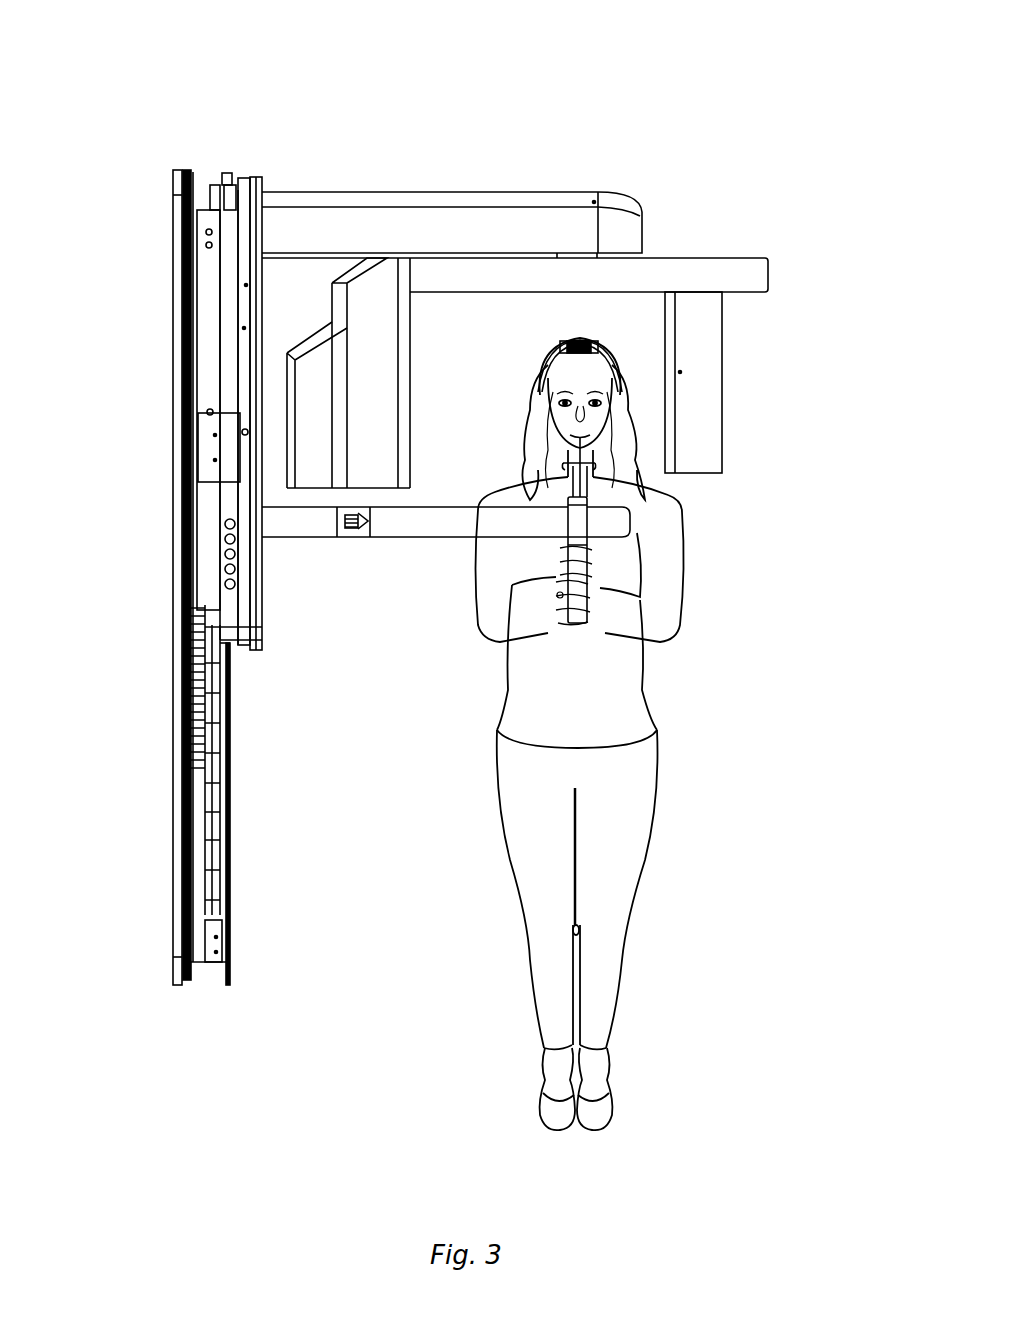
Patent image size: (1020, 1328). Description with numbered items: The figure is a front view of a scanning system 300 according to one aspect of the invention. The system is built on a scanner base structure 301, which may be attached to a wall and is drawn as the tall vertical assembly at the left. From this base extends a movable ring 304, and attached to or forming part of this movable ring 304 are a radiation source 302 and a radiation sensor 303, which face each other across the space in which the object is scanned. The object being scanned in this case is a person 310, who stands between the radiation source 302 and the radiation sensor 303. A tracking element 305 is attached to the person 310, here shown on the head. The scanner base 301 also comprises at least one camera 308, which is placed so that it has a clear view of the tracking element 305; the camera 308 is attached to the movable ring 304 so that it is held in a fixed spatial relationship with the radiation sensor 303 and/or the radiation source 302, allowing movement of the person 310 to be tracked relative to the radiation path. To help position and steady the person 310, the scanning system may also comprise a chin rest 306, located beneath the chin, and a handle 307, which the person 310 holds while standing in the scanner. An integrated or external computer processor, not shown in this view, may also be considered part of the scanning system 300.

The scanning system 300 is at (475, 565).
The scanner base structure 301 is at (203, 287).
The radiation source 302 is at (302, 413).
The radiation sensor 303 is at (685, 390).
The movable ring 304 is at (718, 273).
The tracking element 305 is at (590, 333).
The chin rest 306 is at (598, 437).
The handle 307 is at (570, 603).
The camera 308 is at (560, 268).
The person 310 is at (690, 585).